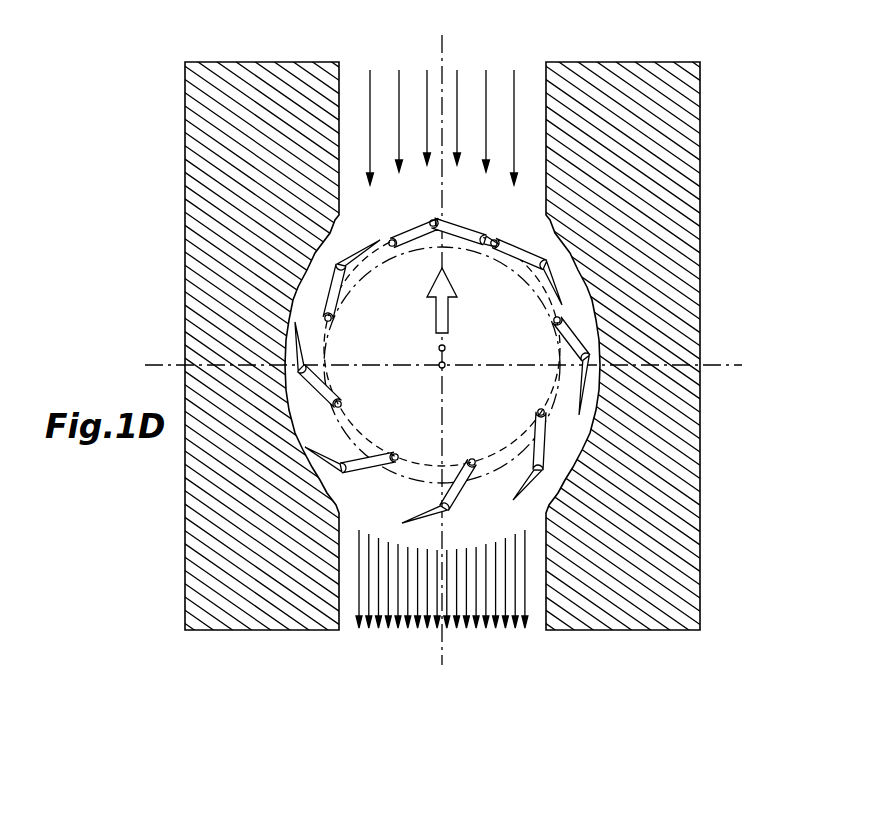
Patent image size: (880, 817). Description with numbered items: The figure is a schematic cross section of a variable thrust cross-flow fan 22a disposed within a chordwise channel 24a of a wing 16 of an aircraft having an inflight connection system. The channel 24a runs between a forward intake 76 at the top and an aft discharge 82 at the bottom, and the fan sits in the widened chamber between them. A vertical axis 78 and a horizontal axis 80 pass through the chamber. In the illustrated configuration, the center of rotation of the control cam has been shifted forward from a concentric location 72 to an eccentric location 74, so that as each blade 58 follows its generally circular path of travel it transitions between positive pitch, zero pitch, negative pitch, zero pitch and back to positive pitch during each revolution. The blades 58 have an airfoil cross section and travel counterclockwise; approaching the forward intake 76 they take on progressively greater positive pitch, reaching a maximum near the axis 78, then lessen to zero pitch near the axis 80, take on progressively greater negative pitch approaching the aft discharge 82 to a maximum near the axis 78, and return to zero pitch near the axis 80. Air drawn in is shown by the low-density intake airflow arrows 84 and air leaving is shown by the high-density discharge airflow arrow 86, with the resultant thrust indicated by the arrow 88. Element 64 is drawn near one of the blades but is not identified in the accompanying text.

The wing 16 is at (184, 147).
The variable thrust cross-flow fan 22a is at (519, 242).
The chordwise channel 24a is at (544, 98).
The blade 58 is at (450, 231).
The blade 64 is at (402, 234).
The concentric location 72 is at (447, 368).
The eccentric location 74 is at (438, 348).
The forward intake 76 is at (456, 194).
The axis 78 is at (445, 58).
The axis 80 is at (170, 362).
The aft discharge 82 is at (456, 542).
The low-density intake airflow arrows 84 is at (397, 80).
The high-density discharge airflow arrow 86 is at (358, 595).
The thrust arrow 88 is at (450, 316).